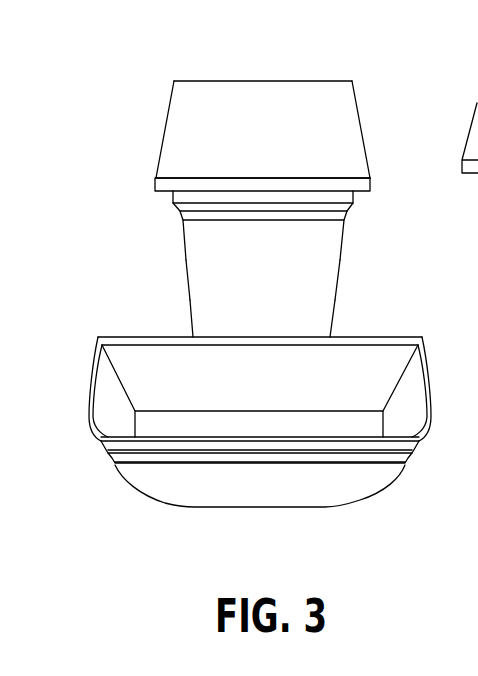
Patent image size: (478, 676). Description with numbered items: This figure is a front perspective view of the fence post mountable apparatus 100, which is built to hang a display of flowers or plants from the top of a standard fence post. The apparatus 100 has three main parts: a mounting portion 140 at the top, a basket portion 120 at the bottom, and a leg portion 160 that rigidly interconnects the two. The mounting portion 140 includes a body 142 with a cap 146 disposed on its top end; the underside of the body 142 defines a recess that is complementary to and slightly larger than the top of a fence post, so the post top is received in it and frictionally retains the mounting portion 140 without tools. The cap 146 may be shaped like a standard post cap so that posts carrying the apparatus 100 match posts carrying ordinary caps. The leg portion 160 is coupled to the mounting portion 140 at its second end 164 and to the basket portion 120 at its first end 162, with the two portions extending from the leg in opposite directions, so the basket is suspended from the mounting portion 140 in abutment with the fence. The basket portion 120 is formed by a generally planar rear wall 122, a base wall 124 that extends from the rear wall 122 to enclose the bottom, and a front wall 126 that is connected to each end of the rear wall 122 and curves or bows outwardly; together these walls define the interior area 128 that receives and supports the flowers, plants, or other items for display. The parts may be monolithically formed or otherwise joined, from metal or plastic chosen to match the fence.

The fence post mountable apparatus 100 is at (136, 111).
The mounting portion 140 is at (338, 100).
The cap 146 is at (222, 92).
The body 142 is at (176, 198).
The leg portion 160 is at (328, 263).
The second end 164 is at (328, 232).
The first end 162 is at (332, 343).
The basket portion 120 is at (107, 398).
The rear wall 122 is at (120, 337).
The base wall 124 is at (215, 422).
The interior area 128 is at (313, 422).
The front wall 126 is at (420, 445).